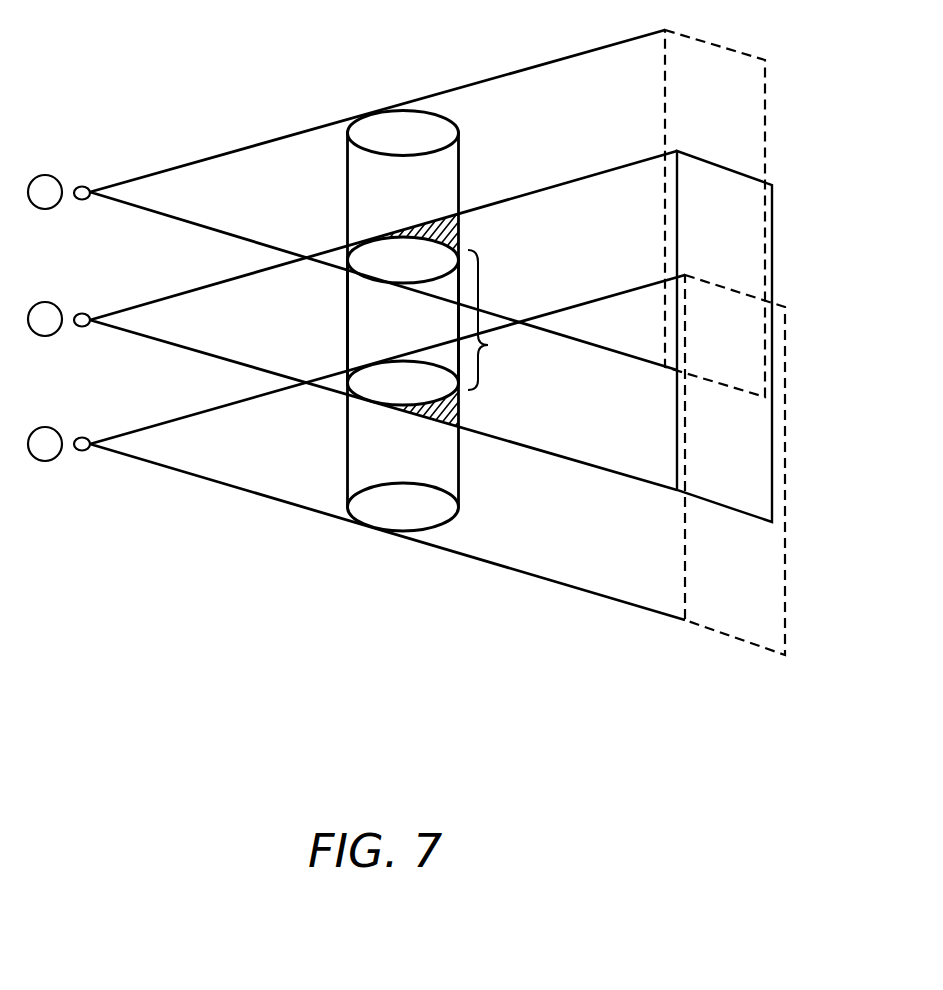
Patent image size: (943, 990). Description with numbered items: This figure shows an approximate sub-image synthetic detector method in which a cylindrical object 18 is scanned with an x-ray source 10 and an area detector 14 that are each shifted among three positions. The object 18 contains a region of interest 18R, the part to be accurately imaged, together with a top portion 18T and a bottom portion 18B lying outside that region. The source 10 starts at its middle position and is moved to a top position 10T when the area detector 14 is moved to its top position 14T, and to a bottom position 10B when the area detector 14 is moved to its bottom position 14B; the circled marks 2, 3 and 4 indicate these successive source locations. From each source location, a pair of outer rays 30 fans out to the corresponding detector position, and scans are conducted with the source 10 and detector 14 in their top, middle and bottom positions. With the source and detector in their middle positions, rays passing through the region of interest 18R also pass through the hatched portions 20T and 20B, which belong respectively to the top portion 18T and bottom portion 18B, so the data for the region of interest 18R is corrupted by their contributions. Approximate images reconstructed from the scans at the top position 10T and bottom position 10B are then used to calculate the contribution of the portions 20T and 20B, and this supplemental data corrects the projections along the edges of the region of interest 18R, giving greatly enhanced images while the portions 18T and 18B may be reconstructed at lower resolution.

The first source position 2 is at (45, 192).
The second source position 3 is at (81, 328).
The third source position 4 is at (45, 444).
The x-ray source 10 is at (59, 347).
The top position of source 10T is at (59, 222).
The bottom position of source 10B is at (59, 473).
The area detector 14 is at (773, 263).
The top position of detector 14T is at (738, 52).
The bottom position of detector 14B is at (784, 618).
The cylindrical object 18 is at (459, 181).
The top portion 18T is at (459, 121).
The bottom portion 18B is at (448, 530).
The region of interest 18R is at (346, 320).
The portion of top portion 20T is at (457, 235).
The portion of bottom portion 20B is at (457, 404).
The rays 30 is at (218, 152).